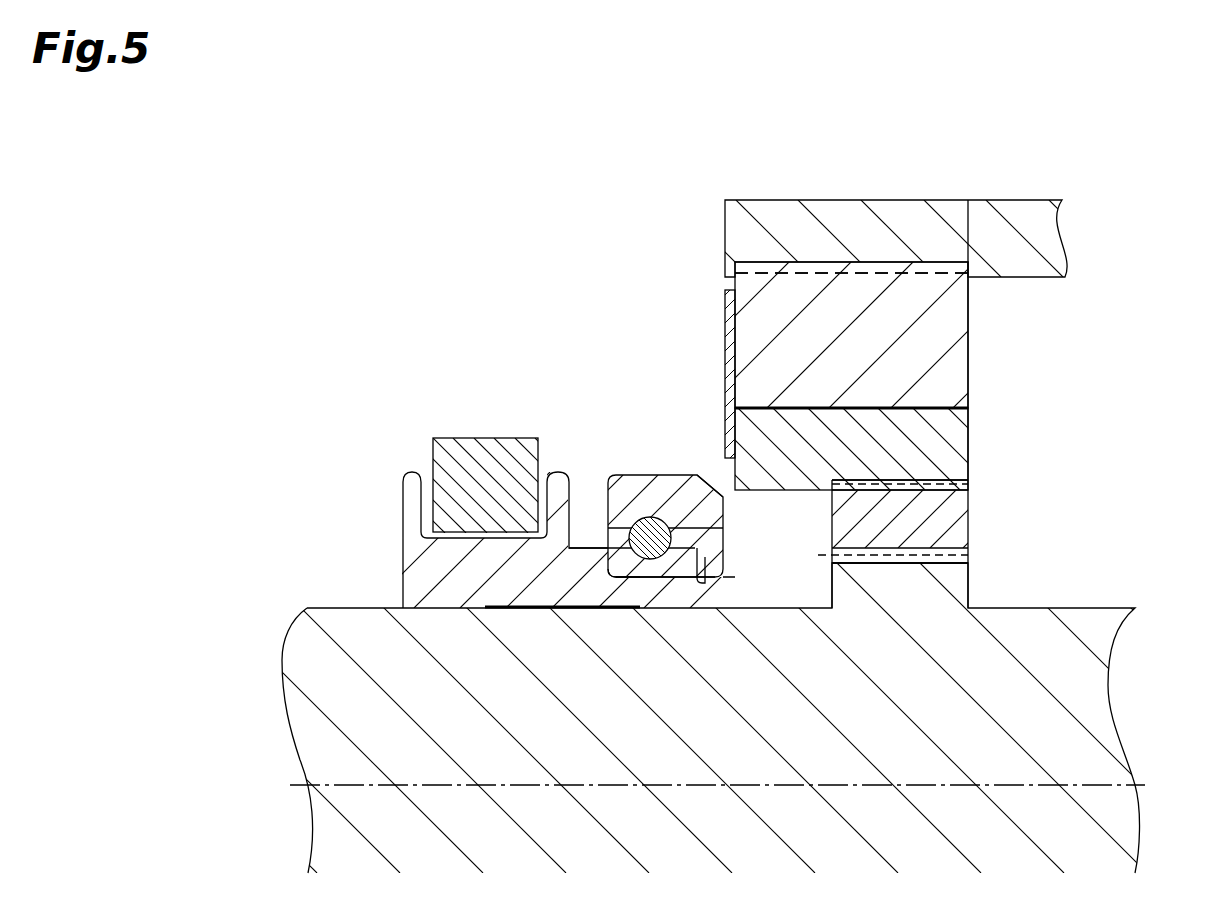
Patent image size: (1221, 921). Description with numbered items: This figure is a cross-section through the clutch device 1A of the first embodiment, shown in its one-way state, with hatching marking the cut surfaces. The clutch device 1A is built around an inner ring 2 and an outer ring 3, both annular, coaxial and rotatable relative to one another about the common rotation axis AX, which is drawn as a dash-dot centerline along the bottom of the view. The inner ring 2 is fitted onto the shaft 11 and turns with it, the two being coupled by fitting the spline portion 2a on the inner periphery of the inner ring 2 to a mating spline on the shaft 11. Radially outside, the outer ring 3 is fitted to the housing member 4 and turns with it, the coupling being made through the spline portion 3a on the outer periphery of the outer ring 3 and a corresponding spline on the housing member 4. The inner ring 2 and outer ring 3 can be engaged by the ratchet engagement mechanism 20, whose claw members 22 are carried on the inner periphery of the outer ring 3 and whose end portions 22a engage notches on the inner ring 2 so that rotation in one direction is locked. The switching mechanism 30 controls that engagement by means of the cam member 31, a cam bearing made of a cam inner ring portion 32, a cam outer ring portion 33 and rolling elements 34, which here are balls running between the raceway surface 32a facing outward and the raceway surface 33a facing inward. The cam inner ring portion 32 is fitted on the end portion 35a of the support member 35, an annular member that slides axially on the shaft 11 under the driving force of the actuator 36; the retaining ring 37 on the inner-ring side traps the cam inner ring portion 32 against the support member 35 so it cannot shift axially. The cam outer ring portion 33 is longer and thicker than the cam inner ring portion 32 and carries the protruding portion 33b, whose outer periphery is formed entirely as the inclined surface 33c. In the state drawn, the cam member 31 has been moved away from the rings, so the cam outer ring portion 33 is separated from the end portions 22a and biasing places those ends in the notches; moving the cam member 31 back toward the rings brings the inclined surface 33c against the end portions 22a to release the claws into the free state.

The clutch device 1A is at (1112, 207).
The inner ring 2 is at (925, 525).
The spline portion 2a is at (968, 555).
The outer ring 3 is at (920, 332).
The spline portion 3a is at (925, 262).
The housing member 4 is at (815, 212).
The shaft 11 is at (1062, 608).
The ratchet engagement mechanism 20 is at (901, 453).
The claw members 22 is at (925, 440).
The end portions 22a is at (890, 484).
The switching mechanism 30 is at (611, 609).
The cam member 31 is at (685, 617).
The cam inner ring portion 32 is at (585, 577).
The raceway surface 32a is at (647, 597).
The cam outer ring portion 33 is at (685, 497).
The raceway surface 33a is at (640, 513).
The protruding portion 33b is at (692, 568).
The inclined surface 33c is at (713, 478).
The rolling elements 34 is at (664, 578).
The support member 35 is at (496, 572).
The end portion 35a is at (658, 565).
The actuator 36 is at (497, 452).
The retaining ring 37 is at (688, 580).
The rotation axis AX is at (1140, 785).